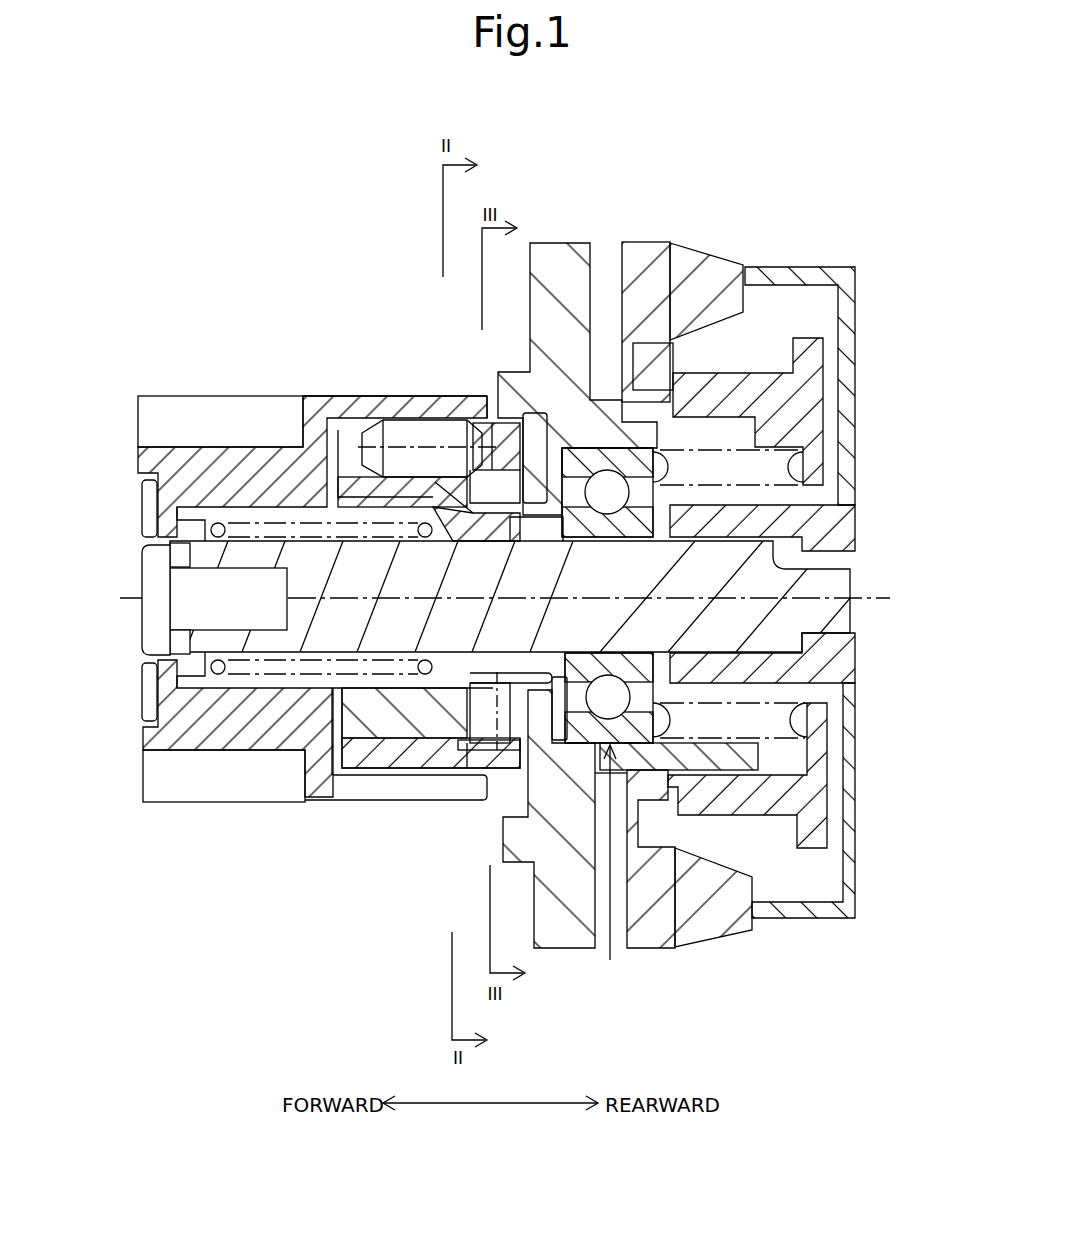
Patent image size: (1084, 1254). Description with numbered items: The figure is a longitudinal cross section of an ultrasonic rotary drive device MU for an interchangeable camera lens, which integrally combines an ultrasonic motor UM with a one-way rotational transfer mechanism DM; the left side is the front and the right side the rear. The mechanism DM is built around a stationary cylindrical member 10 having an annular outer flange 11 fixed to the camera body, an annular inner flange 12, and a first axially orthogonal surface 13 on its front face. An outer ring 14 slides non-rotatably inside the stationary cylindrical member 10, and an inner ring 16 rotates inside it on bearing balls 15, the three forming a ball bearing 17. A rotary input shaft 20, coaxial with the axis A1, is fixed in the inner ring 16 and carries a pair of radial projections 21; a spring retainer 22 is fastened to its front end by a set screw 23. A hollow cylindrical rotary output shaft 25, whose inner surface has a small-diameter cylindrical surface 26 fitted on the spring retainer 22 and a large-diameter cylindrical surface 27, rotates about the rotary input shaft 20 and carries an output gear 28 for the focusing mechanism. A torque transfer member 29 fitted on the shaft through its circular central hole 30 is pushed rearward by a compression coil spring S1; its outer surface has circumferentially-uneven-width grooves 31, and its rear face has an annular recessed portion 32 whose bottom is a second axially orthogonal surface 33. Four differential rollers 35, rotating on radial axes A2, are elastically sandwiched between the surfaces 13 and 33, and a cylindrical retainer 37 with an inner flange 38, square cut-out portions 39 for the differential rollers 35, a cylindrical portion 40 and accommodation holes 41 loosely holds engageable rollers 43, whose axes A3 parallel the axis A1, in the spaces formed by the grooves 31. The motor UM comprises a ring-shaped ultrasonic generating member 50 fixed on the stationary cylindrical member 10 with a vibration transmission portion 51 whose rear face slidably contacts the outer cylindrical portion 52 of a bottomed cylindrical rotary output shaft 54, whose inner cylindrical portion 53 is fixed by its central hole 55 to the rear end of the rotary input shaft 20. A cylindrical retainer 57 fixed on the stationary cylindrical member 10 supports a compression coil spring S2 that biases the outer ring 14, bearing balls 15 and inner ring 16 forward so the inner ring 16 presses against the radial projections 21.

The stationary cylindrical member 10 is at (545, 235).
The annular outer flange 11 is at (550, 935).
The annular inner flange 12 is at (555, 520).
The first axially orthogonal surface 13 is at (508, 765).
The outer ring 14 is at (660, 467).
The bearing balls 15 is at (607, 500).
The inner ring 16 is at (680, 530).
The ball bearing 17 is at (613, 866).
The rotary input shaft 20 is at (840, 612).
The radial projections 21 is at (515, 470).
The spring retainer 22 is at (148, 498).
The set screw 23 is at (150, 625).
The cylindrical rotary output shaft 25 is at (300, 410).
The small-diameter cylindrical surface 26 is at (217, 505).
The large-diameter cylindrical surface 27 is at (453, 418).
The output gear 28 is at (160, 415).
The torque transfer member 29 is at (378, 440).
The circular central hole 30 is at (465, 540).
The circumferentially-uneven-width grooves 31 is at (428, 460).
The annular recessed portion 32 is at (432, 815).
The second axially orthogonal surface 33 is at (500, 775).
The differential rollers 35 is at (385, 768).
The cylindrical retainer 37 is at (345, 760).
The inner flange 38 is at (490, 505).
The square cut-out portions 39 is at (507, 762).
The cylindrical portion 40 is at (360, 760).
The accommodation holes 41 is at (350, 420).
The engageable rollers 43 is at (393, 425).
The ultrasonic generating member 50 is at (650, 240).
The vibration transmission portion 51 is at (735, 265).
The outer cylindrical portion 52 is at (805, 275).
The inner cylindrical portion 53 is at (800, 520).
The cylindrical rotary output shaft 54 is at (846, 400).
The central hole 55 is at (840, 553).
The cylindrical retainer 57 is at (760, 395).
The axis A1 is at (150, 600).
The axes of differential rollers A2 is at (440, 765).
The axes of engageable rollers A3 is at (410, 447).
The compression coil spring S1 is at (215, 690).
The compression coil spring S2 is at (797, 467).
The ultrasonic rotary drive device MU is at (290, 130).
The ultrasonic motor UM is at (638, 182).
The one-way rotational transfer mechanism DM is at (250, 300).